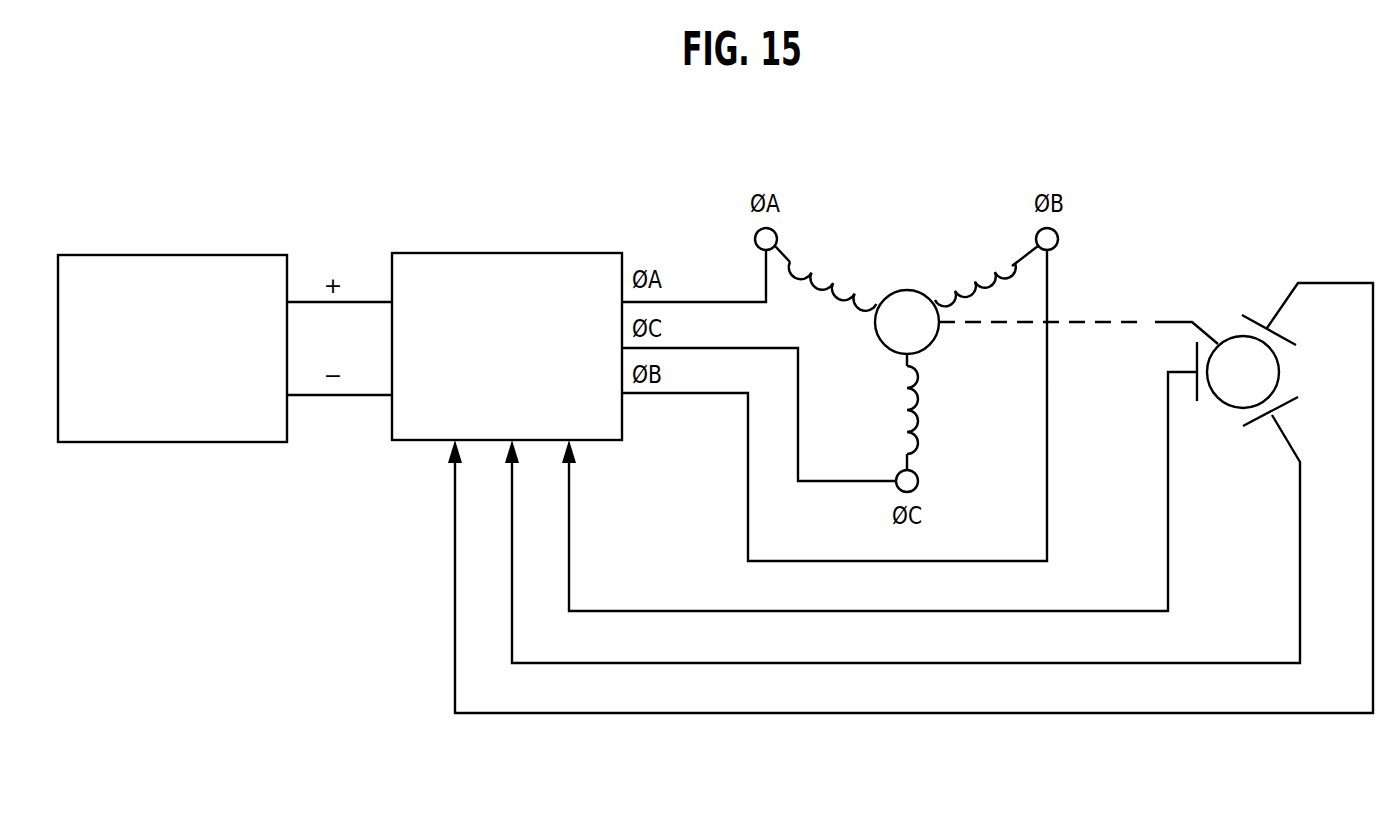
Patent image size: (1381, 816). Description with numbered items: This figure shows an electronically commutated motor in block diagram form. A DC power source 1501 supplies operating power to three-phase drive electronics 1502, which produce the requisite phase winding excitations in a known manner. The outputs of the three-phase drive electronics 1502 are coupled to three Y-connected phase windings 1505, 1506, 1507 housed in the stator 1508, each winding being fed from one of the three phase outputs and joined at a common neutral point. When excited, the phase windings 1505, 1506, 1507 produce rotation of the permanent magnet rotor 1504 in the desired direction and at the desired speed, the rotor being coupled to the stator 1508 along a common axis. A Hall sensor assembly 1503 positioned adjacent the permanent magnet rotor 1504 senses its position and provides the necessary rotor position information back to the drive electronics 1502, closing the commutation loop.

The DC power source 1501 is at (212, 255).
The 3-phase drive electronics 1502 is at (555, 253).
The Hall sensor assembly 1503 is at (1217, 305).
The permanent magnet rotor 1504 is at (1236, 415).
The phase winding 1505 is at (794, 263).
The phase winding 1506 is at (1010, 266).
The phase winding 1507 is at (918, 450).
The stator 1508 is at (868, 342).